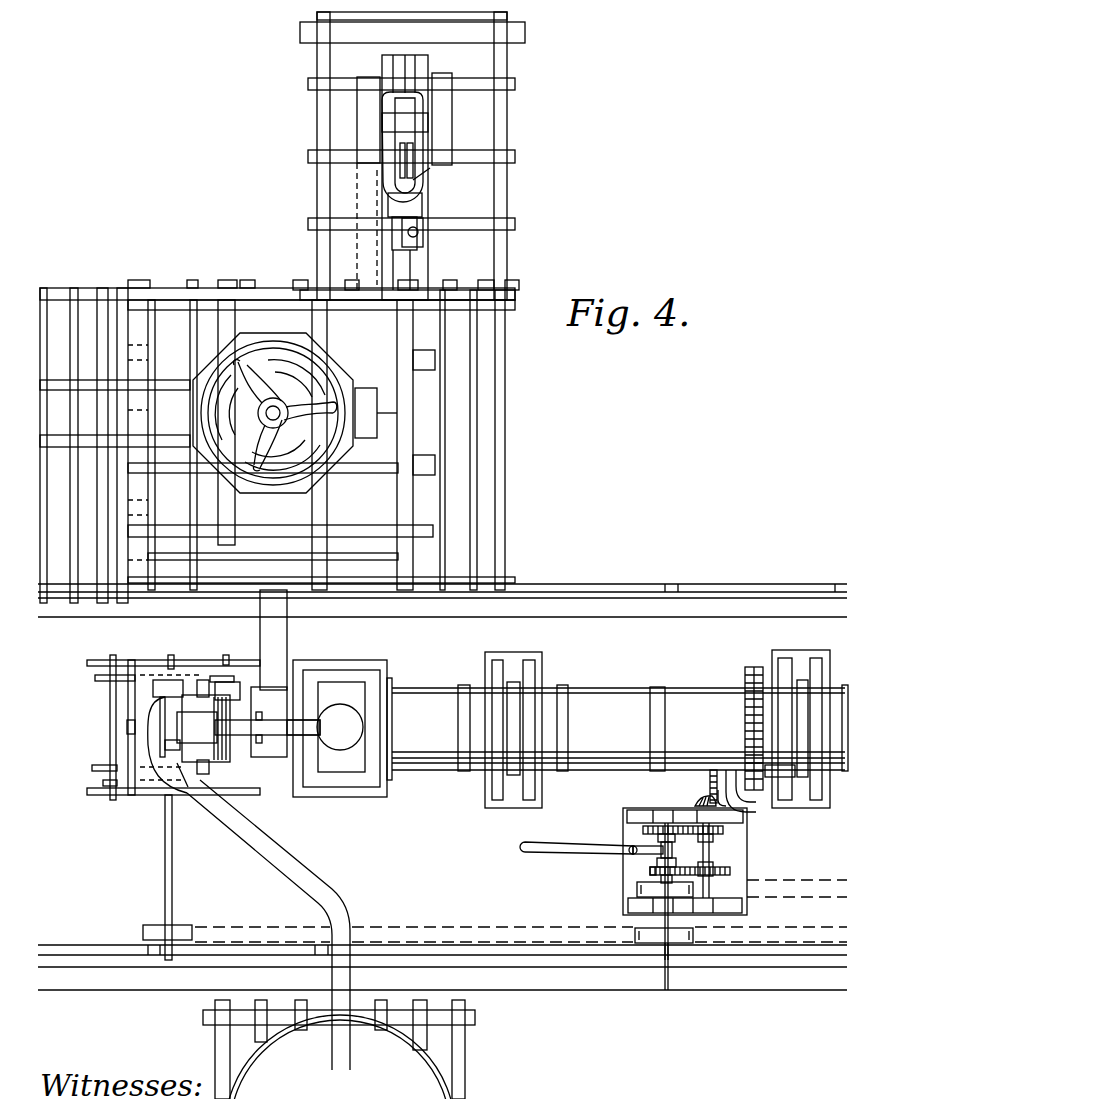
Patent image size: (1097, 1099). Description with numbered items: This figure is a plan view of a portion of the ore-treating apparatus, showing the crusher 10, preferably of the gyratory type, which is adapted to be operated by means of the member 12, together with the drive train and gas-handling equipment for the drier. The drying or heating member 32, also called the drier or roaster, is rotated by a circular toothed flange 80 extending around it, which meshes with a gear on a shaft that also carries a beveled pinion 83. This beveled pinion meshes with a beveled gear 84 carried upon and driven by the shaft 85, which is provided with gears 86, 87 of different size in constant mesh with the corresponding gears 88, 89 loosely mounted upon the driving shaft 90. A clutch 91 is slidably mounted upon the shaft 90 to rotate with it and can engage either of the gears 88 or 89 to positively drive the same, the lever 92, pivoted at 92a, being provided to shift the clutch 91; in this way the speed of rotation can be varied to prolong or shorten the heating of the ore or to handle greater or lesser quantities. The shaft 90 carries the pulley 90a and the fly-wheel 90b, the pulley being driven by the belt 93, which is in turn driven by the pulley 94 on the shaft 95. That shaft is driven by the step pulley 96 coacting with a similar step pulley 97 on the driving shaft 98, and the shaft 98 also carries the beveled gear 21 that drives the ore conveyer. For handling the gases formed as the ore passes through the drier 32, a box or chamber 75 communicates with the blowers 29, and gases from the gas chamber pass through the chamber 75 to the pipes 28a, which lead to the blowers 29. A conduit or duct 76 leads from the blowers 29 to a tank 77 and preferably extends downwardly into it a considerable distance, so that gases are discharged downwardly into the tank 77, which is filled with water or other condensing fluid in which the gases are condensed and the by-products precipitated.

The crusher 10 is at (213, 348).
The member 12 is at (448, 156).
The beveled gear 21 is at (234, 710).
The communicating pipes 28a is at (302, 728).
The blowers 29 is at (212, 758).
The drying or heating member 32 is at (598, 690).
The box or chamber 75 is at (350, 692).
The conduit or duct 76 is at (296, 870).
The tank 77 is at (420, 1080).
The circular toothed flange 80 is at (753, 668).
The beveled pinion 83 is at (710, 778).
The beveled gear 84 is at (695, 802).
The shaft 85 is at (708, 857).
The gear 86 is at (729, 872).
The gear 87 is at (733, 833).
The gear 88 is at (643, 870).
The gear 89 is at (635, 826).
The driving shaft 90 is at (667, 916).
The pulley 90a is at (668, 948).
The fly-wheel 90b is at (637, 888).
The clutch 91 is at (671, 850).
The lever 92 is at (547, 853).
The pivot 92a is at (613, 853).
The belt 93 is at (243, 926).
The pulley 94 is at (158, 934).
The shaft 95 is at (163, 874).
The step pulley 96 is at (143, 676).
The step pulley 97 is at (212, 685).
The driving shaft 98 is at (225, 680).